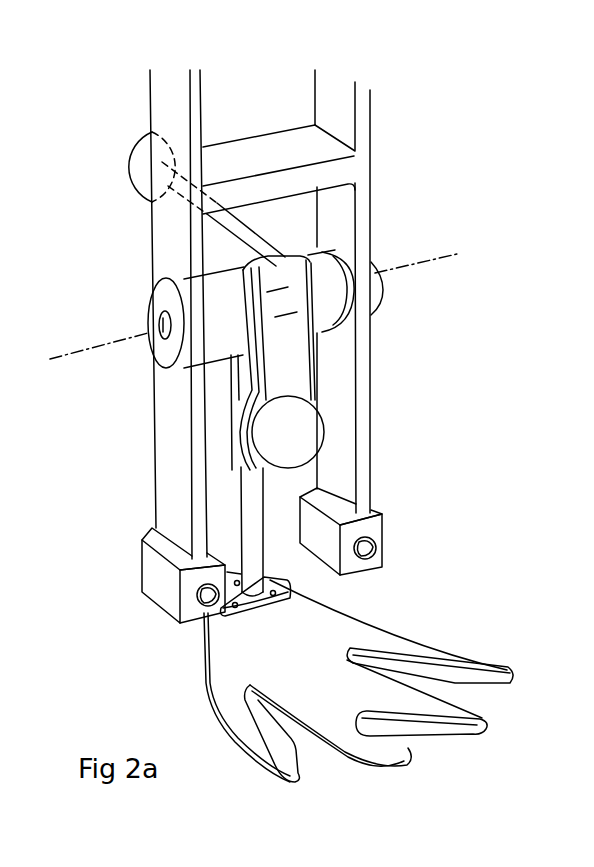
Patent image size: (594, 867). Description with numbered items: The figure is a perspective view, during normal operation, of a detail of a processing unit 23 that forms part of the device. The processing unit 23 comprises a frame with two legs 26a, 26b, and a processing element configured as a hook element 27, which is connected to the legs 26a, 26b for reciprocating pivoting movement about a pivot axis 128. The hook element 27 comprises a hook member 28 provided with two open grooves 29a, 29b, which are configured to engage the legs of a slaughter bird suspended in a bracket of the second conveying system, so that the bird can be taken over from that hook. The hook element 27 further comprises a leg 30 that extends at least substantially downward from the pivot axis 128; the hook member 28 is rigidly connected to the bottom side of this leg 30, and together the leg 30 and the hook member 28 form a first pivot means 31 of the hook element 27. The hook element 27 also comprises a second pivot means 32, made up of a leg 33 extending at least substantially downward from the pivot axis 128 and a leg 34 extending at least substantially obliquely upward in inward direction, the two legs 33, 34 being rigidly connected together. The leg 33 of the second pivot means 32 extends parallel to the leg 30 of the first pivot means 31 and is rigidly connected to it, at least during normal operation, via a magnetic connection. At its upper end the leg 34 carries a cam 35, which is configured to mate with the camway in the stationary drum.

The processing unit 23 is at (439, 187).
The leg 26a is at (358, 415).
The leg 26b is at (173, 453).
The hook element 27 is at (421, 545).
The hook member 28 is at (310, 670).
The open groove 29a is at (274, 723).
The open groove 29b is at (417, 680).
The leg 30 is at (223, 403).
The first pivot means 31 is at (302, 572).
The second pivot means 32 is at (297, 252).
The leg 33 is at (295, 362).
The leg 34 is at (240, 224).
The cam 35 is at (131, 167).
The pivot axis 128 is at (117, 341).